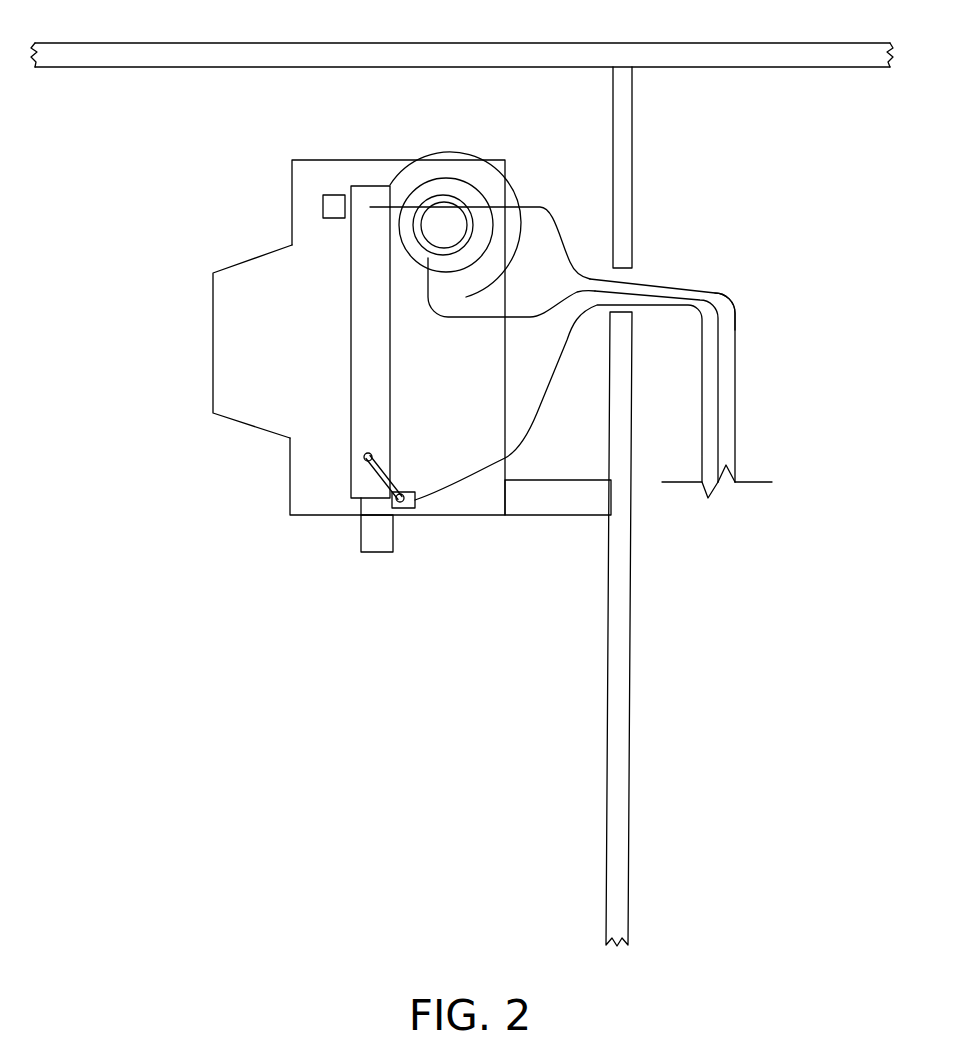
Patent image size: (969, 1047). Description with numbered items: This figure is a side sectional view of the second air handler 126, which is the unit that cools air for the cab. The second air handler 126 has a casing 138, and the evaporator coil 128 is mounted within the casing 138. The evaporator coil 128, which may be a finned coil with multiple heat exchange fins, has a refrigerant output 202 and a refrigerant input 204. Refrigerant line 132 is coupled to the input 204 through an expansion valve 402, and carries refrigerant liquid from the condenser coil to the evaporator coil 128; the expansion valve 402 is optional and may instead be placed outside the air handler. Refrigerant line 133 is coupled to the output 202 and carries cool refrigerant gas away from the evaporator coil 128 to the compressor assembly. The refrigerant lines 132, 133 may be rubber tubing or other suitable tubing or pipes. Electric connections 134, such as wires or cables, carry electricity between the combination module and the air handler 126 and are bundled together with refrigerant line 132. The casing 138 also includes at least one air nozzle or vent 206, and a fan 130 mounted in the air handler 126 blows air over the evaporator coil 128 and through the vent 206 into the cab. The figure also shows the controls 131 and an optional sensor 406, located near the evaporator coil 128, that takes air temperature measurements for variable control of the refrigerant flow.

The second air handler 126 is at (233, 186).
The casing 138 is at (292, 217).
The air nozzle or vent 206 is at (248, 305).
The evaporator coil 128 is at (370, 393).
The sensor 406 is at (323, 203).
The refrigerant output 202 is at (370, 204).
The fan 130 is at (443, 168).
The expansion valve 402 is at (413, 495).
The refrigerant input 204 is at (360, 458).
The controls 131 is at (378, 535).
The electric connections 134 is at (683, 296).
The refrigerant line 133 is at (727, 292).
The refrigerant line 132 is at (667, 308).